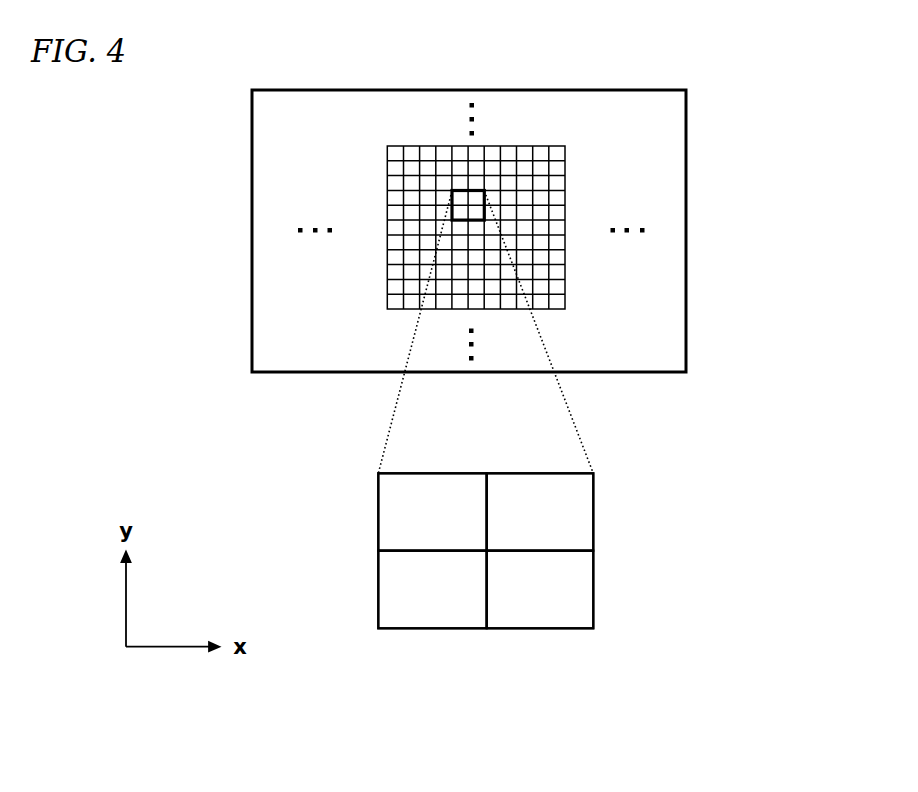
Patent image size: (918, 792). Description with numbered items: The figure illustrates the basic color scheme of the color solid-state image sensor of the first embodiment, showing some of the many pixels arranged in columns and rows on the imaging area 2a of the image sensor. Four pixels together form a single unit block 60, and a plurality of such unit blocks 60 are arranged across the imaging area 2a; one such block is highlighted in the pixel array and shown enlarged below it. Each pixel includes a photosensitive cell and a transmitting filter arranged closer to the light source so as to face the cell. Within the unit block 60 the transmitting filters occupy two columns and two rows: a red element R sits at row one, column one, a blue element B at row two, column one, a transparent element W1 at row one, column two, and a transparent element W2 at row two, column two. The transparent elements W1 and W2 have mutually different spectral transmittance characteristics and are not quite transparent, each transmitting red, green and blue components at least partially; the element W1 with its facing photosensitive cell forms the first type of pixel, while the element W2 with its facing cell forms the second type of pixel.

The imaging area 2a is at (687, 182).
The unit block 60 is at (549, 549).
The red element R is at (432, 511).
The transparent element W1 is at (540, 511).
The blue element B is at (432, 590).
The transparent element W2 is at (540, 590).